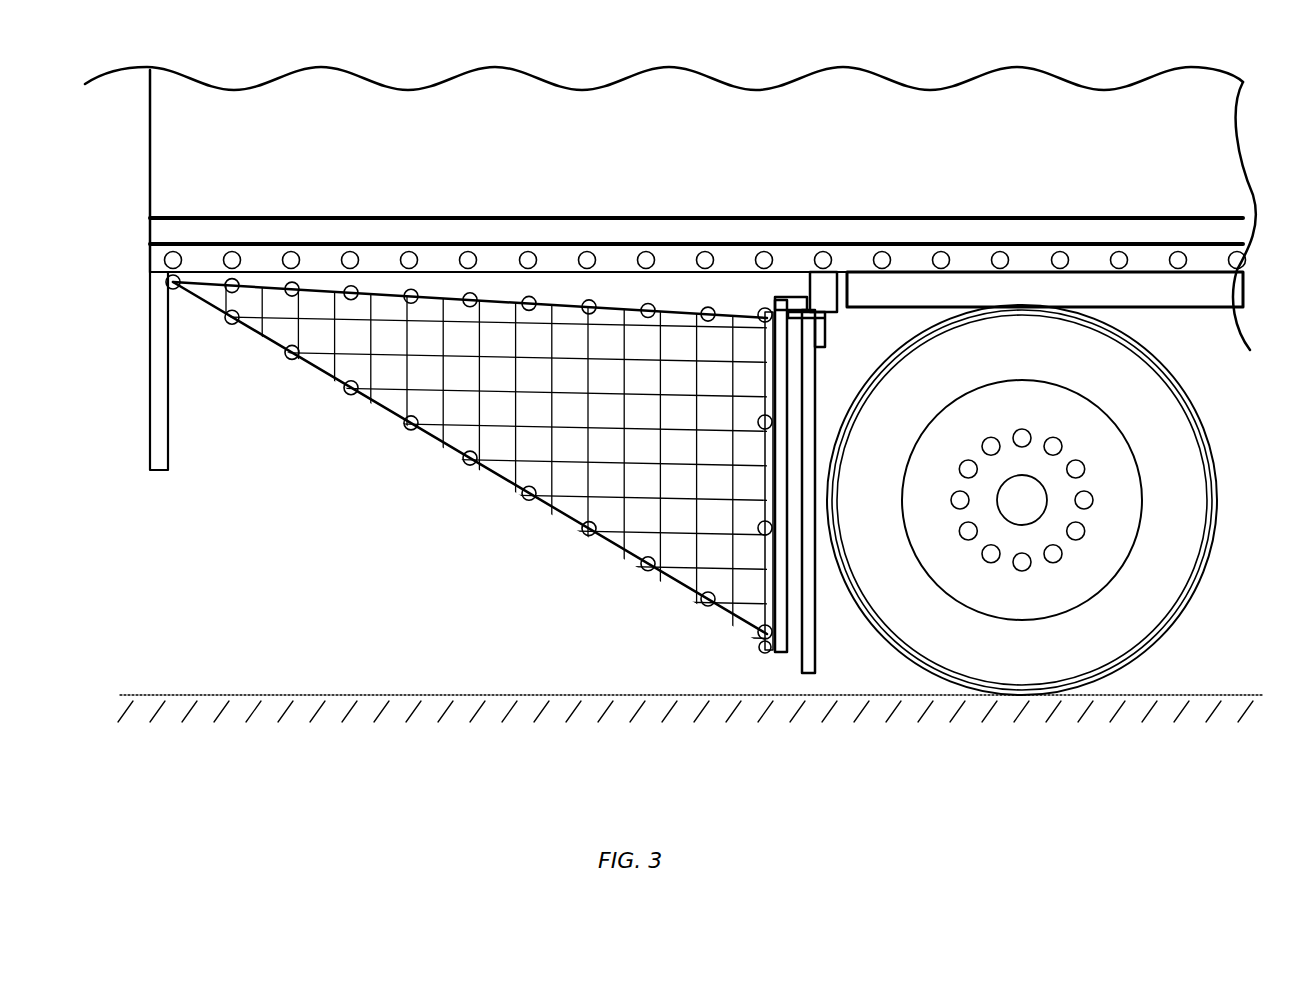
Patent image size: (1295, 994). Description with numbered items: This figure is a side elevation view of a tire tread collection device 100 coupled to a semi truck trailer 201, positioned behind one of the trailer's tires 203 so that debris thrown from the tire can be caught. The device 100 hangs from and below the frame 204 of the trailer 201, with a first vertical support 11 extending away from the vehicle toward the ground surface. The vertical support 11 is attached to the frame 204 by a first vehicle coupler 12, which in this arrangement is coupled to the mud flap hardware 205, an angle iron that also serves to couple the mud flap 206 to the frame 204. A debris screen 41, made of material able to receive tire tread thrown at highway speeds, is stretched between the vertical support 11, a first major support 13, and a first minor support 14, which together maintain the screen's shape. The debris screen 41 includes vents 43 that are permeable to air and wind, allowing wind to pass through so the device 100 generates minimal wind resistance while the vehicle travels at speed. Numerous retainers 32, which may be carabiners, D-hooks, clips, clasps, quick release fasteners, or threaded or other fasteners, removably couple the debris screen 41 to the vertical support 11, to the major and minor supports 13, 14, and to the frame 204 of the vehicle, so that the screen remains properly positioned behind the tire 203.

The tire tread collection device 100 is at (506, 546).
The first vertical support 11 is at (782, 585).
The first vehicle coupler 12 is at (776, 299).
The first major support 13 is at (455, 456).
The first minor support 14 is at (447, 300).
The retainer 32 is at (175, 280).
The debris screen 41 is at (657, 500).
The vent 43 is at (352, 332).
The truck trailer 201 is at (1215, 139).
The tire 203 is at (1182, 508).
The frame 204 is at (1030, 262).
The mud flap hardware 205 is at (830, 276).
The mud flap 206 is at (814, 405).